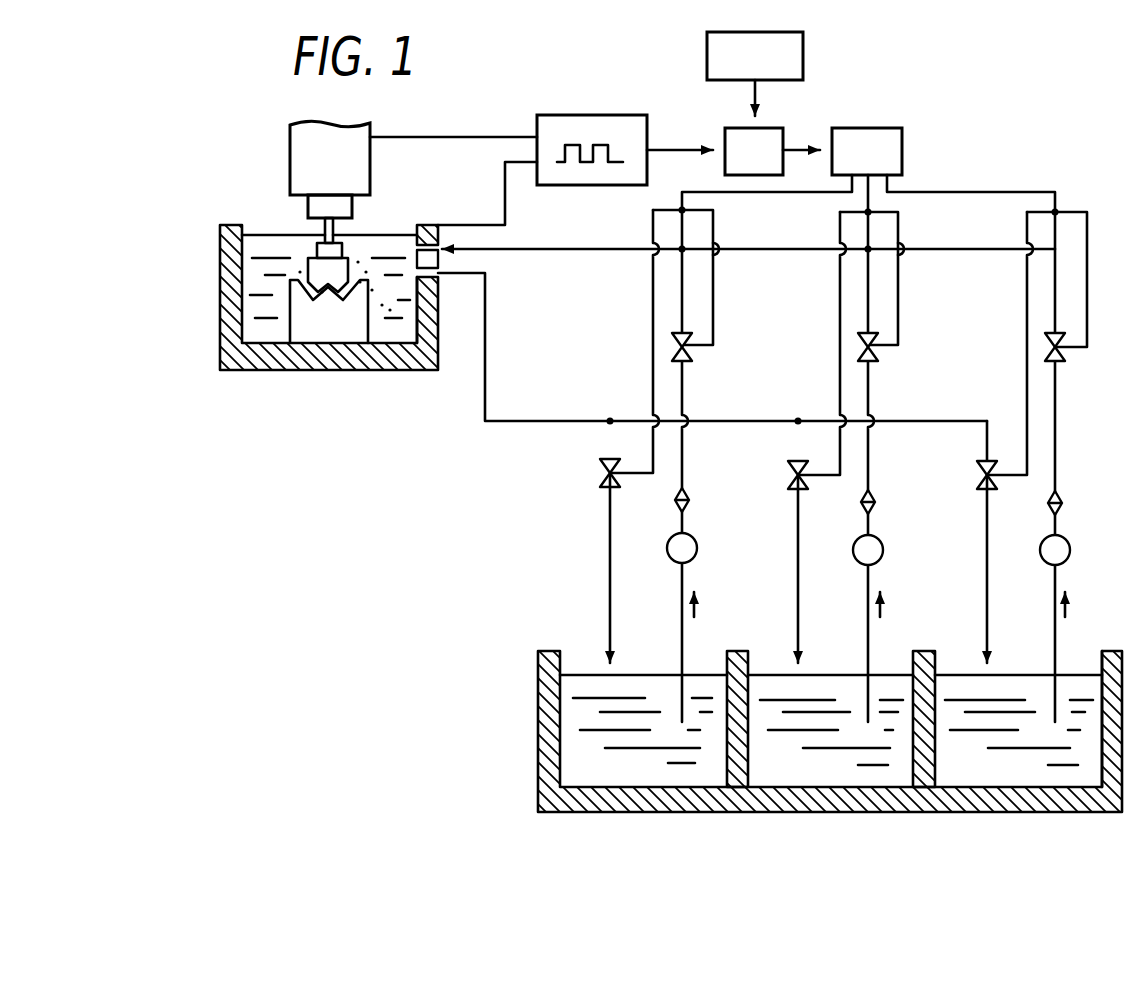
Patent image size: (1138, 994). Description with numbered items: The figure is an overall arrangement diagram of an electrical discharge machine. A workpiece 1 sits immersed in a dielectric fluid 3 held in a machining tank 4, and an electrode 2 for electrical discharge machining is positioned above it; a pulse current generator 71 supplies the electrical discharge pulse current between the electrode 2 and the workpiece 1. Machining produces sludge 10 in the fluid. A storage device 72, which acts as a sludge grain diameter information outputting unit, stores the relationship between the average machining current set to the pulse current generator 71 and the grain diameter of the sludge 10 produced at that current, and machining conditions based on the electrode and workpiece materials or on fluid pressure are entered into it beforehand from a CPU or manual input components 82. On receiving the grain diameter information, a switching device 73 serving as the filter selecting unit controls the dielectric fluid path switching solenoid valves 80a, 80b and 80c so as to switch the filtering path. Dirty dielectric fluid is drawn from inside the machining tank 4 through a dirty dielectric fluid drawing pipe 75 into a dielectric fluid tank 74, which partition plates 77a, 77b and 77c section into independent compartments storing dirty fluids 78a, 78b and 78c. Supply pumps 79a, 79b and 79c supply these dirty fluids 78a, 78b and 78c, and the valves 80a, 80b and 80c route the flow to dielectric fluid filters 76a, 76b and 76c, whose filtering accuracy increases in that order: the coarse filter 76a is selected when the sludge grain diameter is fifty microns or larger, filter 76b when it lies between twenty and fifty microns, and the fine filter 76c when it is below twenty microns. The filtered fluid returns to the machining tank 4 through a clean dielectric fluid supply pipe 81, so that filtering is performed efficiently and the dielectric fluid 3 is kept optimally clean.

The workpiece 1 is at (296, 312).
The electrode 2 is at (338, 270).
The dielectric fluid 3 is at (257, 250).
The machining tank 4 is at (220, 248).
The sludge 10 is at (438, 313).
The pulse current generator 71 is at (597, 115).
The storage device 72 is at (754, 151).
The switching device 73 is at (867, 151).
The dielectric fluid tank 74 is at (538, 660).
The dirty dielectric fluid drawing pipe 75 is at (482, 405).
The dielectric fluid filter 76a is at (673, 502).
The dielectric fluid filter 76b is at (860, 504).
The dielectric fluid filter 76c is at (1047, 506).
The partition plate 77a is at (727, 760).
The partition plate 77b is at (913, 760).
The partition plate 77c is at (1102, 760).
The dirty fluid 78a is at (597, 770).
The dirty fluid 78b is at (817, 770).
The dirty fluid 78c is at (1003, 770).
The supply pump 79a is at (672, 560).
The supply pump 79b is at (858, 562).
The supply pump 79c is at (1045, 562).
The dielectric fluid path switching solenoid valve 80a is at (674, 350).
The dielectric fluid path switching solenoid valve 80b is at (860, 350).
The dielectric fluid path switching solenoid valve 80c is at (1047, 348).
The clean dielectric fluid supply pipe 81 is at (589, 248).
The CPU or manual input components 82 is at (803, 46).